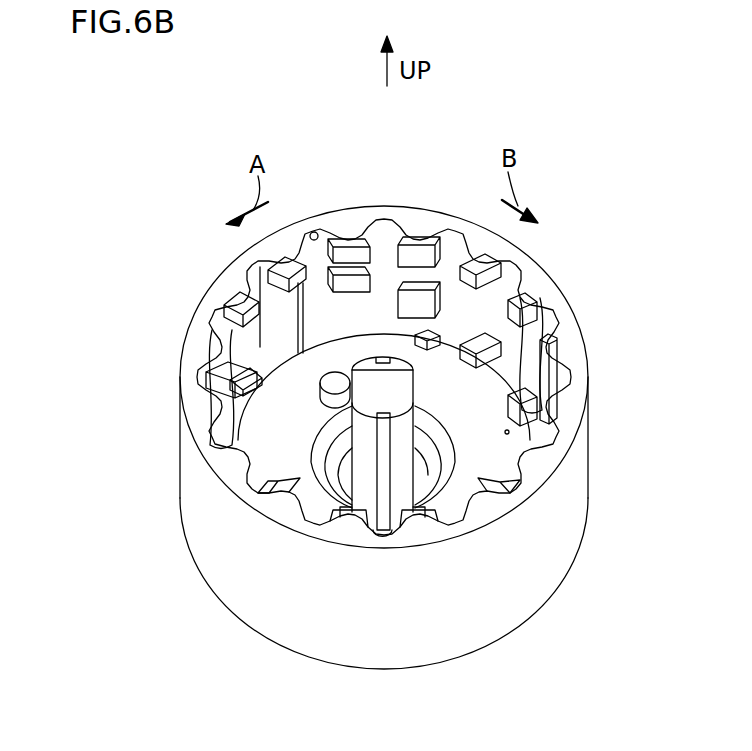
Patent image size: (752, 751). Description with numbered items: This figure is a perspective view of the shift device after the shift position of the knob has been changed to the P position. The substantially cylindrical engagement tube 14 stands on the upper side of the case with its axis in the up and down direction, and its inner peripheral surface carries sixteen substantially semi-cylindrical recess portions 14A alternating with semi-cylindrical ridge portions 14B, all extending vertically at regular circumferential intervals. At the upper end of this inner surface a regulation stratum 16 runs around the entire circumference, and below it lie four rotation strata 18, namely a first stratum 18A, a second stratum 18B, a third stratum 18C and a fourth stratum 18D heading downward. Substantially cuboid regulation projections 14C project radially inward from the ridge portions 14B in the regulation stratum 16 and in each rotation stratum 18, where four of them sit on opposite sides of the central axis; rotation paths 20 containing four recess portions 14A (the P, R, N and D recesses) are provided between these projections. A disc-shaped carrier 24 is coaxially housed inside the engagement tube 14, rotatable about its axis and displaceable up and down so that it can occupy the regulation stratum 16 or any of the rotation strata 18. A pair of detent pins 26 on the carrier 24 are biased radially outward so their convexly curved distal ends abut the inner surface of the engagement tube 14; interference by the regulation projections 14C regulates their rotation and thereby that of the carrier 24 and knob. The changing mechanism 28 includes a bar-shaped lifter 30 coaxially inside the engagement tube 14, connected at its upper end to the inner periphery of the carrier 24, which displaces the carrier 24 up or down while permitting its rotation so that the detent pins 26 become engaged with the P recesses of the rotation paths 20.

The engagement tube 14 is at (389, 329).
The recess portions 14A is at (314, 231).
The ridge portions 14B is at (430, 238).
The regulation projections 14C is at (350, 239).
The regulation stratum 16 is at (238, 312).
The rotation strata 18 is at (292, 242).
The first stratum 18A is at (262, 278).
The second stratum 18B is at (222, 320).
The third stratum 18C is at (210, 378).
The fourth stratum 18D is at (420, 343).
The rotation paths 20 is at (487, 317).
The carrier 24 is at (345, 350).
The detent pins 26 is at (565, 417).
The changing mechanism 28 is at (410, 446).
The lifter 30 is at (438, 478).